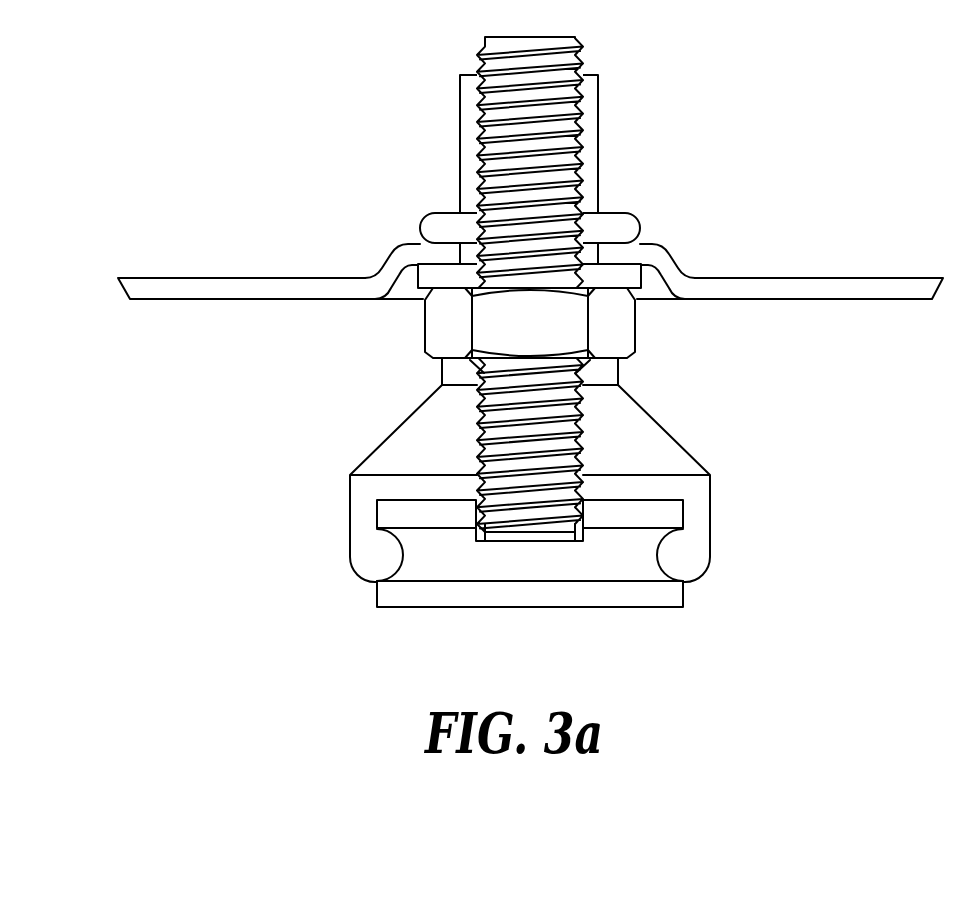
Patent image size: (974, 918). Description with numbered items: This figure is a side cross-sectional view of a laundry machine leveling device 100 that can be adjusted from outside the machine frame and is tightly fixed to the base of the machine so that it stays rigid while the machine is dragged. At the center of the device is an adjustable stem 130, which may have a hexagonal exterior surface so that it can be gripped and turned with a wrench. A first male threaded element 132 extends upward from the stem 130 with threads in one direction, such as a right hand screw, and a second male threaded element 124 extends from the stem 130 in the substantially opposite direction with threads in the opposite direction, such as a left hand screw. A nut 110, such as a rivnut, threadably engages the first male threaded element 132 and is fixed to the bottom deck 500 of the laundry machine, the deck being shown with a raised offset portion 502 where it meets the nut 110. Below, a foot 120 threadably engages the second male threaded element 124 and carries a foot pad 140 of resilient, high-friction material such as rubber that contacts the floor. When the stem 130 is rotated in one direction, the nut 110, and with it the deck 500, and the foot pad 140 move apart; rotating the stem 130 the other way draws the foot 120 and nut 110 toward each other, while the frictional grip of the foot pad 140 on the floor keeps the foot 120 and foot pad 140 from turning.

The laundry machine leveling device 100 is at (108, 179).
The nut 110 is at (417, 212).
The foot 120 is at (377, 442).
The second male threaded element 124 is at (592, 437).
The adjustable stem 130 is at (635, 340).
The first male threaded element 132 is at (588, 132).
The foot pad 140 is at (375, 597).
The bottom deck 500 is at (287, 277).
The raised offset portion of plate 502 is at (680, 252).